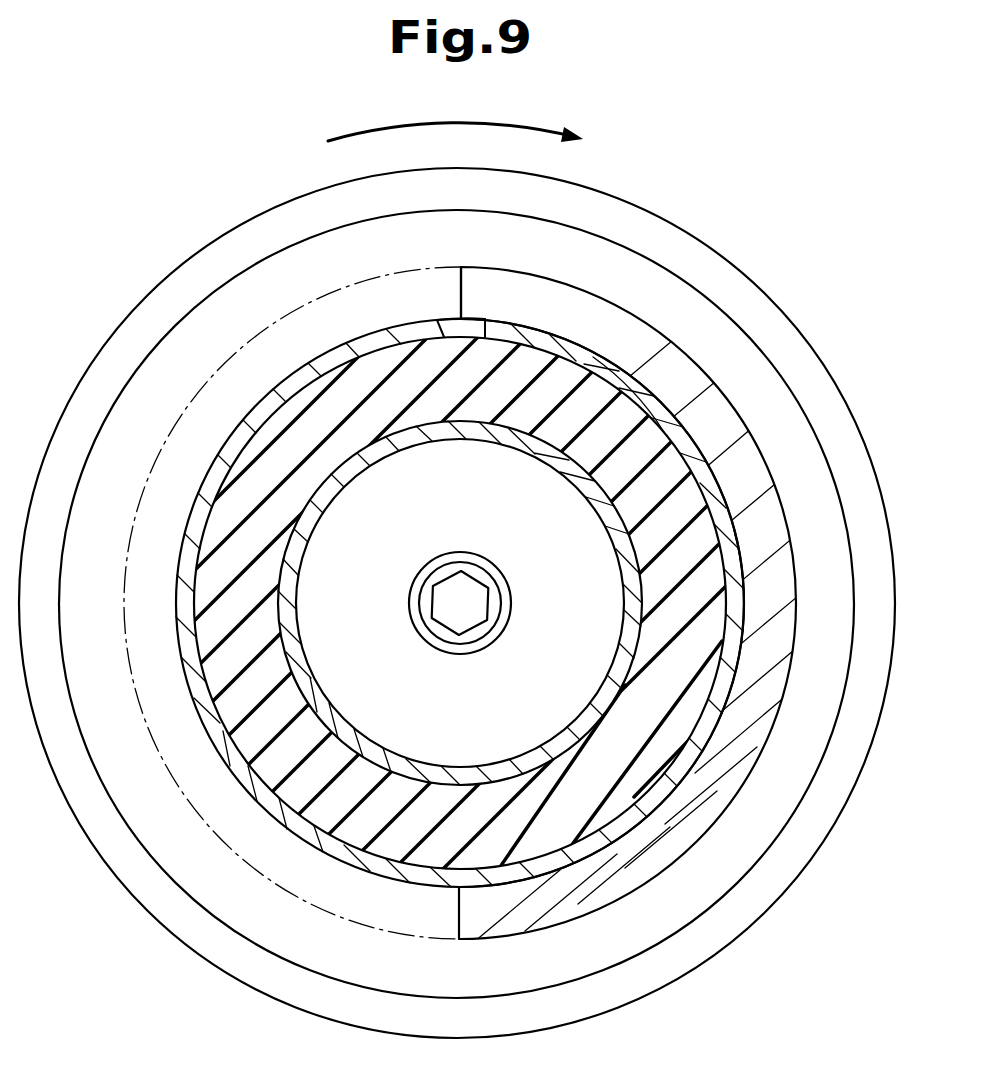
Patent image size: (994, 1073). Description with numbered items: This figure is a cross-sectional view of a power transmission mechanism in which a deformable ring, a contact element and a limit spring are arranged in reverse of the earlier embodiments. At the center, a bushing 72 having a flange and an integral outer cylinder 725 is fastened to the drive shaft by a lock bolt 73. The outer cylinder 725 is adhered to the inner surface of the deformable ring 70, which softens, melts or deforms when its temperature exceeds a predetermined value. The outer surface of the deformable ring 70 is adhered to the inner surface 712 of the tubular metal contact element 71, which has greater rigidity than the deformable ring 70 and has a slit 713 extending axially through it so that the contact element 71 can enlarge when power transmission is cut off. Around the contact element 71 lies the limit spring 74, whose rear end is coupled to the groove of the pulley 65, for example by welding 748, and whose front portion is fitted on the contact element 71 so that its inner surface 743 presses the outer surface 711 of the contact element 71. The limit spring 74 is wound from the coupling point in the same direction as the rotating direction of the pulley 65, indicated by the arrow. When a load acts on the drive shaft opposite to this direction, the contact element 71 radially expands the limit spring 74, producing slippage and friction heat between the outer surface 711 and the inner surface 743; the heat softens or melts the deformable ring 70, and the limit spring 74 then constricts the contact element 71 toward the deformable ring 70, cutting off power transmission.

The pulley 65 is at (790, 328).
The deformable ring 70 is at (708, 535).
The contact element 71 is at (735, 620).
The bushing 72 is at (480, 725).
The lock bolt 73 is at (503, 605).
The limit spring 74 is at (755, 452).
The outer surface of the contact element 711 is at (642, 422).
The inner surface of the contact element 712 is at (641, 420).
The slit 713 is at (477, 323).
The outer cylinder 725 is at (424, 441).
The inner surface of the limit spring 743 is at (733, 577).
The welding 748 is at (460, 313).